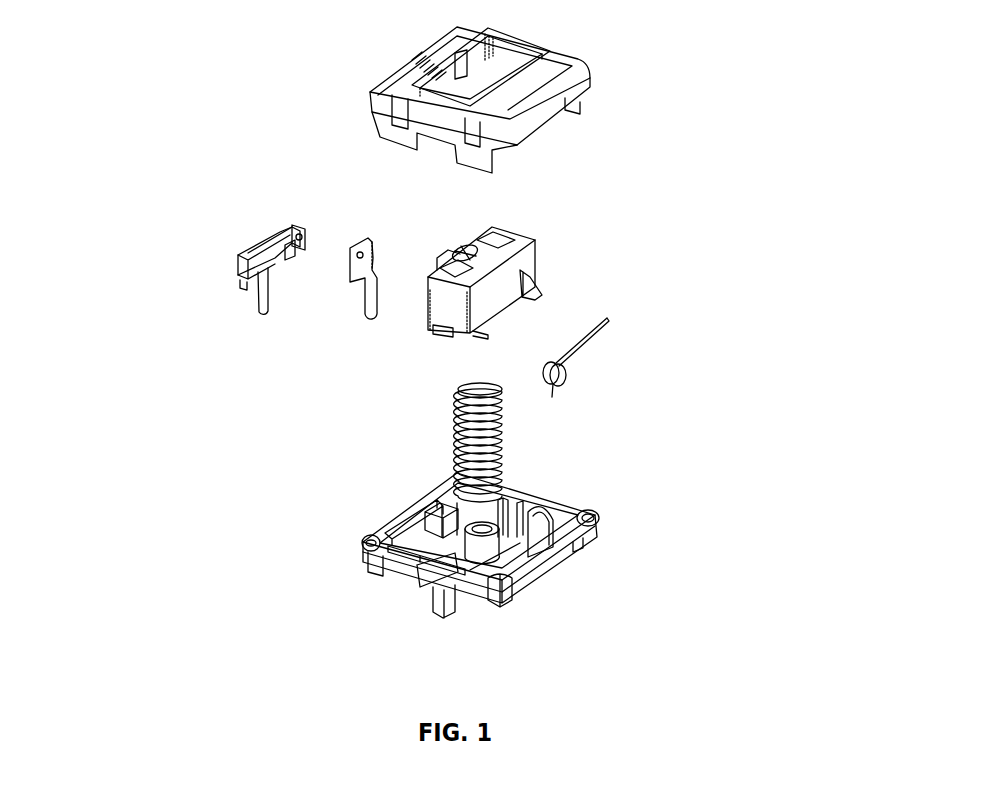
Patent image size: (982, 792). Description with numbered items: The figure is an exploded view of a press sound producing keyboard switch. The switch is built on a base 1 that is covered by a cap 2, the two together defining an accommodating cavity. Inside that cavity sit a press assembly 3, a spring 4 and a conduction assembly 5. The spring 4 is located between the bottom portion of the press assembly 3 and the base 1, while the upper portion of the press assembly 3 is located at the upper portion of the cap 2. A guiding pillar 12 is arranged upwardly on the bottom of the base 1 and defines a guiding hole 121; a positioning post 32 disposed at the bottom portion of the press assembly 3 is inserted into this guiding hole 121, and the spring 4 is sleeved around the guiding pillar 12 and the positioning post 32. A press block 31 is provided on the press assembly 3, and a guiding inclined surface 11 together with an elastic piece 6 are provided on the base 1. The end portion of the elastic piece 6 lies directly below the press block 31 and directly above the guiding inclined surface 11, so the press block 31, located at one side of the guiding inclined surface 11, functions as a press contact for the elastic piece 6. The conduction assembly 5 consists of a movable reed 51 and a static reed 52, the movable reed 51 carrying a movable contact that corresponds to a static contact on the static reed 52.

The base 1 is at (534, 537).
The guiding inclined surface 11 is at (550, 515).
The guiding pillar 12 is at (437, 567).
The guiding hole 121 is at (475, 540).
The cap 2 is at (575, 60).
The press assembly 3 is at (590, 242).
The press block 31 is at (544, 271).
The positioning post 32 is at (478, 328).
The spring 4 is at (460, 421).
The conduction assembly 5 is at (221, 287).
The movable reed 51 is at (238, 256).
The static reed 52 is at (349, 281).
The elastic piece 6 is at (565, 367).